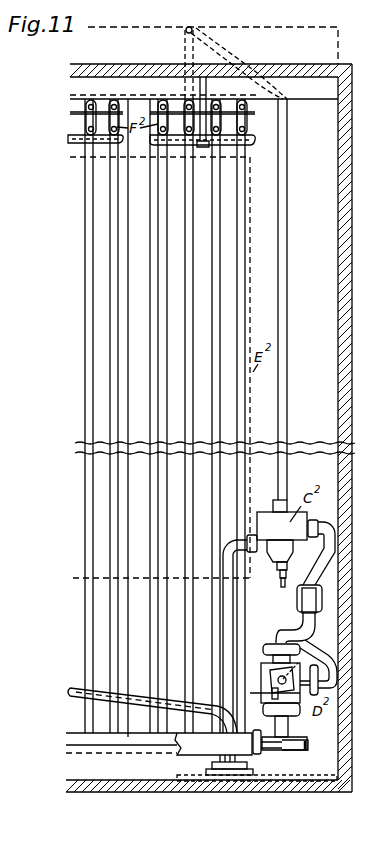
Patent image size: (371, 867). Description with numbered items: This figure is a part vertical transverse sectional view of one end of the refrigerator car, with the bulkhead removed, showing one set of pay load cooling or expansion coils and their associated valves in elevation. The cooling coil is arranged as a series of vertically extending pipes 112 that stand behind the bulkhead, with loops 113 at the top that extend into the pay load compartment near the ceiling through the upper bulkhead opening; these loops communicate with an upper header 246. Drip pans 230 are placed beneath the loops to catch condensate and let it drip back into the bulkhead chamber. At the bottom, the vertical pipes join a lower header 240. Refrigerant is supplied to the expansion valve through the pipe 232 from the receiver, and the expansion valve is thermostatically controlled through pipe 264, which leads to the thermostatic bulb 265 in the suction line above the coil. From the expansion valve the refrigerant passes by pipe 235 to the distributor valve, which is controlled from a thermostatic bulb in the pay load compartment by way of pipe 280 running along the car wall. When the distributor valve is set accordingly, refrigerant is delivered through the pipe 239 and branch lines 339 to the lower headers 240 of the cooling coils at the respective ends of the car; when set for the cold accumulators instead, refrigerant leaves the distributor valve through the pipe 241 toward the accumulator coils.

The vertically extending pipes 112 is at (115, 478).
The loops 113 is at (162, 101).
The drip pans 230 is at (73, 142).
The pipe 232 is at (226, 608).
The pipe 235 is at (323, 608).
The pipe 239 is at (273, 750).
The lower header 240 is at (201, 734).
The pipe 241 is at (292, 631).
The upper header 246 is at (73, 99).
The pipe 264 is at (286, 466).
The thermostatic bulb 265 is at (178, 103).
The pipe 280 is at (335, 383).
The branch lines 339 is at (301, 750).